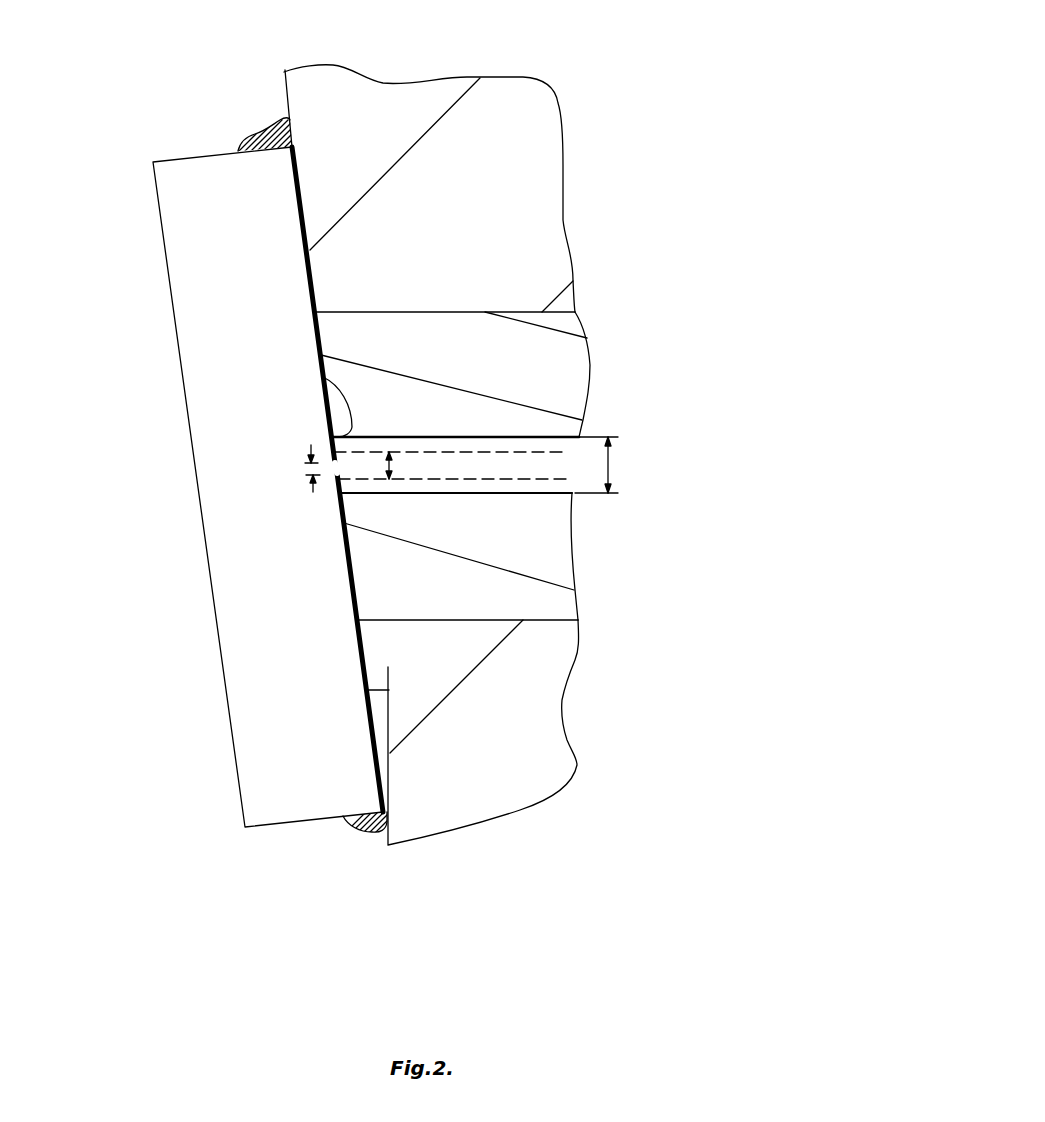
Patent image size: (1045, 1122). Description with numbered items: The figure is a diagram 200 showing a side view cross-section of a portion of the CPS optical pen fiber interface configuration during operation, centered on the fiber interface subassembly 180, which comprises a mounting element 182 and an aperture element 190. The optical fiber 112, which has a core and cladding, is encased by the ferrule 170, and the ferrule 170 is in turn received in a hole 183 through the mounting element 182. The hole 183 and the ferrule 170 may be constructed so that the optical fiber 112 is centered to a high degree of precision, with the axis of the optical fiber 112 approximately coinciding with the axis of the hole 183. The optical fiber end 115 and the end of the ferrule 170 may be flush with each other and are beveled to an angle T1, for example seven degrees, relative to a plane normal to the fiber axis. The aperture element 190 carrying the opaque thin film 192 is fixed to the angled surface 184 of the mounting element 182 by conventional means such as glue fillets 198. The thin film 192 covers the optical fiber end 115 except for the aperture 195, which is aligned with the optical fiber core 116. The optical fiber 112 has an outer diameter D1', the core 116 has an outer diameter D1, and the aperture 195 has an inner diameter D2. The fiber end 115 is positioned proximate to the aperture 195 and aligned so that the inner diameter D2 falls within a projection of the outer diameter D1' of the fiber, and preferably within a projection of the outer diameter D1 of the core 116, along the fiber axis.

The diagram 200 is at (702, 70).
The mounting element 182 is at (543, 125).
The angled surface 184 is at (286, 89).
The hole 183 is at (457, 312).
The ferrule 170 is at (568, 358).
The optical fiber 112 is at (555, 437).
The optical fiber core 116 is at (568, 465).
The fiber interface subassembly 180 is at (550, 704).
The aperture element 190 is at (165, 167).
The opaque thin film 192 is at (365, 706).
The aperture 195 is at (328, 470).
The glue fillets 198 is at (265, 127).
The optical fiber end 115 is at (323, 377).
The outer diameter of the optical fiber core D1 is at (408, 439).
The outer diameter of the optical fiber D1' is at (648, 470).
The inner diameter of the aperture D2 is at (308, 452).
The bevel angle T1 is at (378, 686).